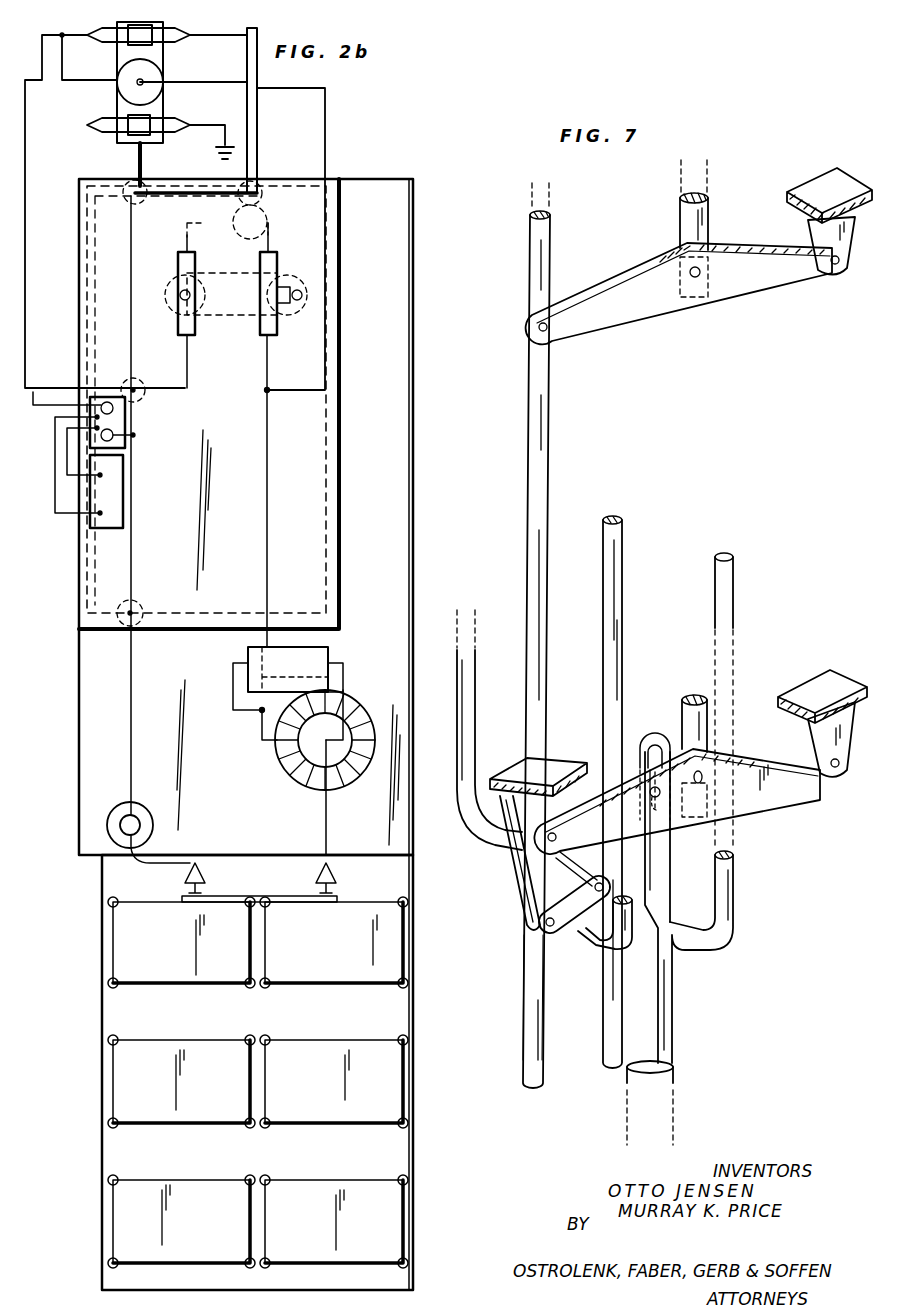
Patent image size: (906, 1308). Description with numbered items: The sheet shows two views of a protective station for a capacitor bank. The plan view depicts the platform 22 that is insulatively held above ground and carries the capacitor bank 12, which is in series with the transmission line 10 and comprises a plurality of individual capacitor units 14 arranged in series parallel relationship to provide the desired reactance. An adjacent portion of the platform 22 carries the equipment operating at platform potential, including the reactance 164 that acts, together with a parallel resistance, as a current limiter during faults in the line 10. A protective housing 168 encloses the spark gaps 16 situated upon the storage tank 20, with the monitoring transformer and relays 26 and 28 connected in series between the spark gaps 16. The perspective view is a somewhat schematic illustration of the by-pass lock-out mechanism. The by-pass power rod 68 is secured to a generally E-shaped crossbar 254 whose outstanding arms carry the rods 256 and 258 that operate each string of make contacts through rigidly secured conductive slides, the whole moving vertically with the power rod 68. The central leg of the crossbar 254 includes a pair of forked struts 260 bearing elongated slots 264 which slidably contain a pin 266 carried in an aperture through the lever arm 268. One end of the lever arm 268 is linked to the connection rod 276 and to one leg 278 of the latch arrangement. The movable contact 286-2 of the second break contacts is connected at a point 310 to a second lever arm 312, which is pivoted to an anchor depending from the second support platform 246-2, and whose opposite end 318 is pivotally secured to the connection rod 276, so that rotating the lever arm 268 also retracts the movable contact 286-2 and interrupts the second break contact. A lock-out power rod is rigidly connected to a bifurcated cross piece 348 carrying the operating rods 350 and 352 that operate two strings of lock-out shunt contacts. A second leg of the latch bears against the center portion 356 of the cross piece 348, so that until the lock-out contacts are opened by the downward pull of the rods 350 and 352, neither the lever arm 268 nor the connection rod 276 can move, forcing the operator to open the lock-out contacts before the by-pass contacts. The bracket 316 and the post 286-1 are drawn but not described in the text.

In FIG. 2B, the transmission line 10 is at (131, 282).
In FIG. 2B, the capacitor bank 12 is at (66, 1160).
In FIG. 2B, the capacitor units 14 is at (366, 1024).
In FIG. 2B, the spark gaps 16 is at (260, 340).
In FIG. 2B, the storage tank 20 is at (237, 304).
In FIG. 2B, the platform 22 is at (78, 578).
In FIG. 2B, the monitoring transformer and relay 26 is at (227, 247).
In FIG. 2B, the monitoring transformer and relay 28 is at (238, 232).
In FIG. 2B, the reactance 164 is at (302, 777).
In FIG. 2B, the protective housing 168 is at (340, 595).
In FIG. 7, the second support platform 246-2 is at (817, 182).
In FIG. 7, the movable contact 286-2 is at (680, 226).
In FIG. 7, the bracket 316 is at (810, 232).
In FIG. 7, the second lever arm 312 is at (747, 297).
In FIG. 7, the connection point 310 is at (696, 278).
In FIG. 7, the opposite end of lever arm 318 is at (587, 333).
In FIG. 7, the connection rod 276 is at (552, 455).
In FIG. 7, the rod 258 is at (622, 632).
In FIG. 7, the rod 256 is at (735, 618).
In FIG. 7, the operating rod 350 is at (474, 712).
In FIG. 7, the post 286-1 is at (700, 689).
In FIG. 7, the elongated slots 264 is at (670, 712).
In FIG. 7, the pin 266 is at (660, 795).
In FIG. 7, the lever arm 268 is at (762, 797).
In FIG. 7, the leg of latch arrangement 278 is at (526, 889).
In FIG. 7, the forked struts 260 is at (665, 900).
In FIG. 7, the crossbar 254 is at (745, 896).
In FIG. 7, the cross piece 348 is at (525, 952).
In FIG. 7, the center portion of cross piece 356 is at (579, 928).
In FIG. 7, the operating rod 352 is at (625, 945).
In FIG. 7, the by-pass power rod 68 is at (673, 1076).